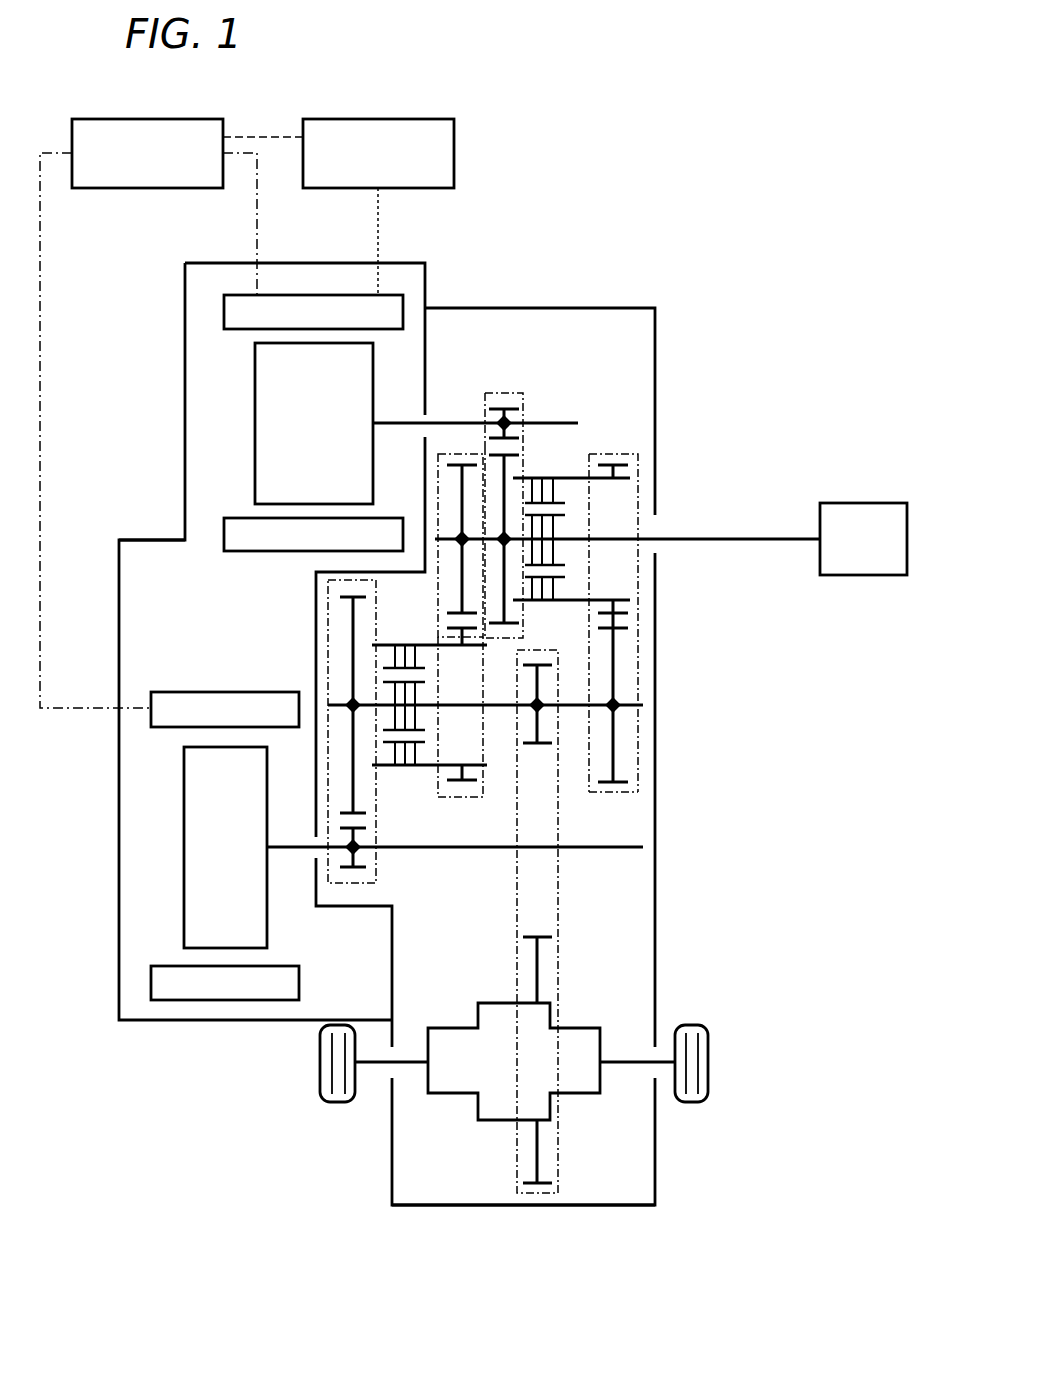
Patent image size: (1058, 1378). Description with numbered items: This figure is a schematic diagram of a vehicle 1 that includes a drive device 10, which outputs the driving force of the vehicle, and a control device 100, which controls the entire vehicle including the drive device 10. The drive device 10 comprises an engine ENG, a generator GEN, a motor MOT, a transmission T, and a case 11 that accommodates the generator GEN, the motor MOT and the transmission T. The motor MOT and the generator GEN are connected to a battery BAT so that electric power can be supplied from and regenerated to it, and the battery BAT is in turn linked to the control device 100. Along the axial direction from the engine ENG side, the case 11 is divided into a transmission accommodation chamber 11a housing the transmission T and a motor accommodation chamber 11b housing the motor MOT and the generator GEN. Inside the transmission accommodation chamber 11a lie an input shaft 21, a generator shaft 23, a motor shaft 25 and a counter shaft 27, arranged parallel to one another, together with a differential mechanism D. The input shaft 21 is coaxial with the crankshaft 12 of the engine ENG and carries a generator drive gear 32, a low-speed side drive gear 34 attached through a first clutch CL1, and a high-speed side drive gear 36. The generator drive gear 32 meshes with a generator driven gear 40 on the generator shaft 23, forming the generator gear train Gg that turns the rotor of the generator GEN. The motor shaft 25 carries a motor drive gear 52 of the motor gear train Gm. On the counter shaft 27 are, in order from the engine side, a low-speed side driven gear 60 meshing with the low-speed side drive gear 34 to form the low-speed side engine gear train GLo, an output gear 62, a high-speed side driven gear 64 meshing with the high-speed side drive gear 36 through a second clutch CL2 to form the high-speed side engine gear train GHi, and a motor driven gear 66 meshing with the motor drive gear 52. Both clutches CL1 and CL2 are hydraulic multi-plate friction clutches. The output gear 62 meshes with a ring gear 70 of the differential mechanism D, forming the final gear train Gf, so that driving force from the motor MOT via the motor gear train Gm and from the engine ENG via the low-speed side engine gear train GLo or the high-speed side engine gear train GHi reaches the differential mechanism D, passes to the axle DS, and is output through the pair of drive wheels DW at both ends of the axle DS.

The vehicle 1 is at (581, 142).
The drive device 10 is at (463, 281).
The case 11 is at (657, 340).
The transmission accommodation chamber 11a is at (630, 893).
The motor accommodation chamber 11b is at (160, 570).
The crankshaft 12 is at (757, 537).
The input shaft 21 is at (646, 528).
The generator shaft 23 is at (578, 423).
The motor shaft 25 is at (643, 847).
The counter shaft 27 is at (645, 708).
The generator drive gear 32 is at (511, 462).
The low-speed side drive gear 34 is at (627, 455).
The high-speed side drive gear 36 is at (456, 465).
The generator driven gear 40 is at (498, 405).
The motor drive gear 52 is at (372, 871).
The low-speed side driven gear 60 is at (628, 637).
The output gear 62 is at (545, 664).
The high-speed side driven gear 64 is at (468, 785).
The motor driven gear 66 is at (366, 596).
The ring gear 70 is at (531, 935).
The control device 100 is at (419, 119).
The battery BAT is at (148, 413).
The engine ENG is at (863, 539).
The generator GEN is at (268, 441).
The motor MOT is at (138, 690).
The transmission T is at (561, 346).
The first clutch CL1 is at (570, 494).
The second clutch CL2 is at (390, 660).
The generator gear train Gg is at (527, 398).
The low-speed side engine gear train GLo is at (640, 575).
The high-speed side engine gear train GHi is at (432, 782).
The motor gear train Gm is at (345, 886).
The final gear train Gf is at (558, 990).
The differential mechanism D is at (476, 992).
The axle DS is at (415, 1068).
The drive wheels DW is at (318, 1080).